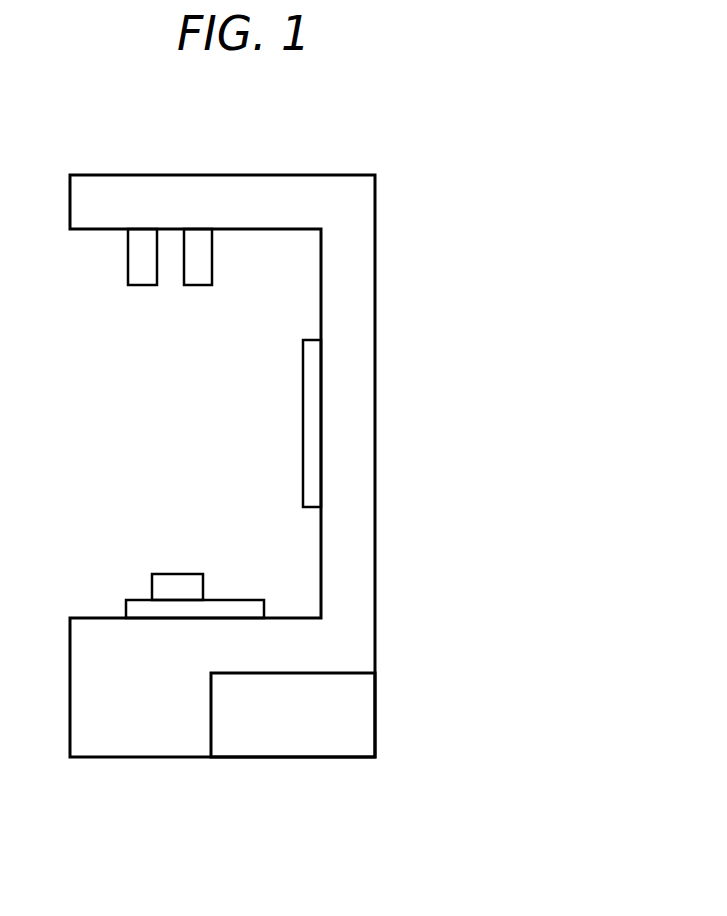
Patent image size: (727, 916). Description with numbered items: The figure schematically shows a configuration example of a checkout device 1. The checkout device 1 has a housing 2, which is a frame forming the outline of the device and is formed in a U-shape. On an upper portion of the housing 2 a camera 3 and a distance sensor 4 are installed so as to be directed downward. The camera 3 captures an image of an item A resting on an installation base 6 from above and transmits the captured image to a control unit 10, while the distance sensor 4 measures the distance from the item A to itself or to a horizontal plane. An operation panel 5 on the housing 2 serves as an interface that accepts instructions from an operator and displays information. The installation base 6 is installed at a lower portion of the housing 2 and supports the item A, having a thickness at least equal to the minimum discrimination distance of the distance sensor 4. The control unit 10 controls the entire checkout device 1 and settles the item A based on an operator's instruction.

The checkout device 1 is at (261, 148).
The housing 2 is at (377, 350).
The camera 3 is at (142, 287).
The distance sensor 4 is at (196, 287).
The operation panel 5 is at (303, 400).
The installation base 6 is at (126, 612).
The item A is at (179, 573).
The control unit 10 is at (211, 696).